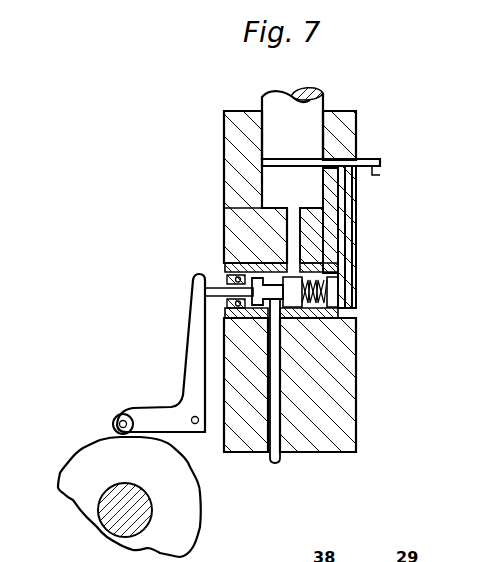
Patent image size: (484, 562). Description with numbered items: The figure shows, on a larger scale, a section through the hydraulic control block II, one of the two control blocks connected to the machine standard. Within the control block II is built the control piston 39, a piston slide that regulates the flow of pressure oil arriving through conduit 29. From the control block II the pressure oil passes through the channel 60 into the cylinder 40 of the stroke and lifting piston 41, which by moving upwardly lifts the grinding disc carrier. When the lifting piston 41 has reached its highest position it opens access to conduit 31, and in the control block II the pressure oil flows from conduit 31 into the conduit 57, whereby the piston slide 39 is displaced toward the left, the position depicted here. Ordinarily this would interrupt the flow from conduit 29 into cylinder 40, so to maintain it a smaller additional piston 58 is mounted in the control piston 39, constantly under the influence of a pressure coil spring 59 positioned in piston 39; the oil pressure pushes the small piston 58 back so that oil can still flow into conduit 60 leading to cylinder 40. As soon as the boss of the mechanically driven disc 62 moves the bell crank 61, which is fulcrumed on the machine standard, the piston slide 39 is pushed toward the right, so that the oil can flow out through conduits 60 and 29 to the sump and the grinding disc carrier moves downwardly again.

The hydraulic control block II is at (328, 378).
The conduit 29 is at (278, 463).
The conduit 31 is at (372, 168).
The control piston 39 is at (353, 327).
The cylinder 40 is at (265, 188).
The stroke and lifting piston 41 is at (272, 133).
The conduit 57 is at (347, 210).
The additional piston 58 is at (352, 270).
The pressure coil spring 59 is at (353, 297).
The channel 60 is at (262, 240).
The bell crank 61 is at (197, 345).
The mechanically driven disc 62 is at (88, 458).